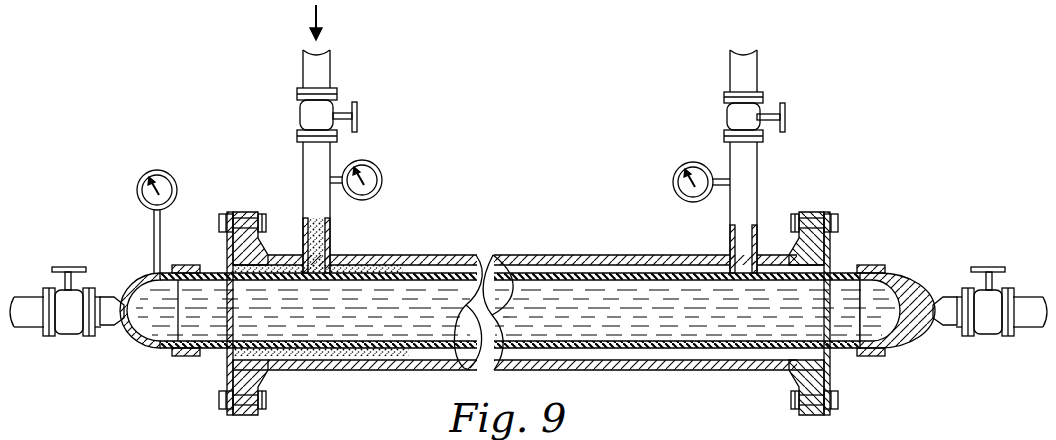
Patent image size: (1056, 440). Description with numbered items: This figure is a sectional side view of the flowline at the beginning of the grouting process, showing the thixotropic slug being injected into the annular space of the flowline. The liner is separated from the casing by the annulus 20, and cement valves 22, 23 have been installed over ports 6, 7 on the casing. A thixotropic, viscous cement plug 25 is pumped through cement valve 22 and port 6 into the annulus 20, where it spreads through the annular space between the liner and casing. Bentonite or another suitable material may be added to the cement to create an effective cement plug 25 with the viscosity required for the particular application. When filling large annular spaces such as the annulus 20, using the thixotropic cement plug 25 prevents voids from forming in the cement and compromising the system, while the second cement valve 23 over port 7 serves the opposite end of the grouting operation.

The annulus 20 is at (556, 265).
The thixotropic cement plug 25 is at (388, 265).
The port 6 is at (334, 243).
The port 7 is at (728, 243).
The cement valve 22 is at (298, 120).
The cement valve 23 is at (726, 119).